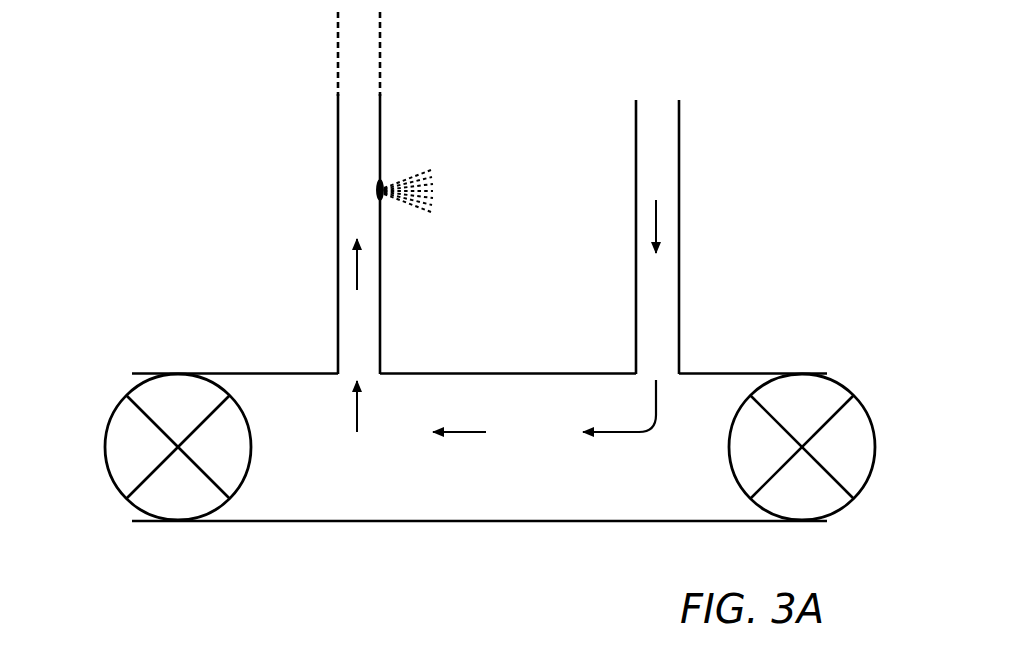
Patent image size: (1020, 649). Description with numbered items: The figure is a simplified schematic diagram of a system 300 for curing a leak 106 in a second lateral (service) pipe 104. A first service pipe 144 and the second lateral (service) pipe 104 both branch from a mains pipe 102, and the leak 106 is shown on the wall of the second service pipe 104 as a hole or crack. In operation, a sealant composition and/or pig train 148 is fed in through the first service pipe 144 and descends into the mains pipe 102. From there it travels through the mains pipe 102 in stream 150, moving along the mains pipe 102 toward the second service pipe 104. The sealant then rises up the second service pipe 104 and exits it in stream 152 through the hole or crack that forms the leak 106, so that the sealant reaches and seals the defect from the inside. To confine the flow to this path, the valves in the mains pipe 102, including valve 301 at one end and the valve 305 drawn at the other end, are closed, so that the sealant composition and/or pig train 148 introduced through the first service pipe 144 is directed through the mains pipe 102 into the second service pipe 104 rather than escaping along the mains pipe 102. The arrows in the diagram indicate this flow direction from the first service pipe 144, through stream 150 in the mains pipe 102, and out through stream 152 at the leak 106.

The system 300 is at (791, 72).
The mains pipe 102 is at (582, 373).
The second lateral (service) pipe 104 is at (382, 309).
The leak 106 is at (383, 177).
The first service pipe 144 is at (681, 311).
The sealant composition and/or pig train 148 is at (656, 75).
The stream 150 is at (622, 434).
The stream 152 is at (434, 191).
The valve 301 is at (842, 508).
The roller 305 is at (105, 443).